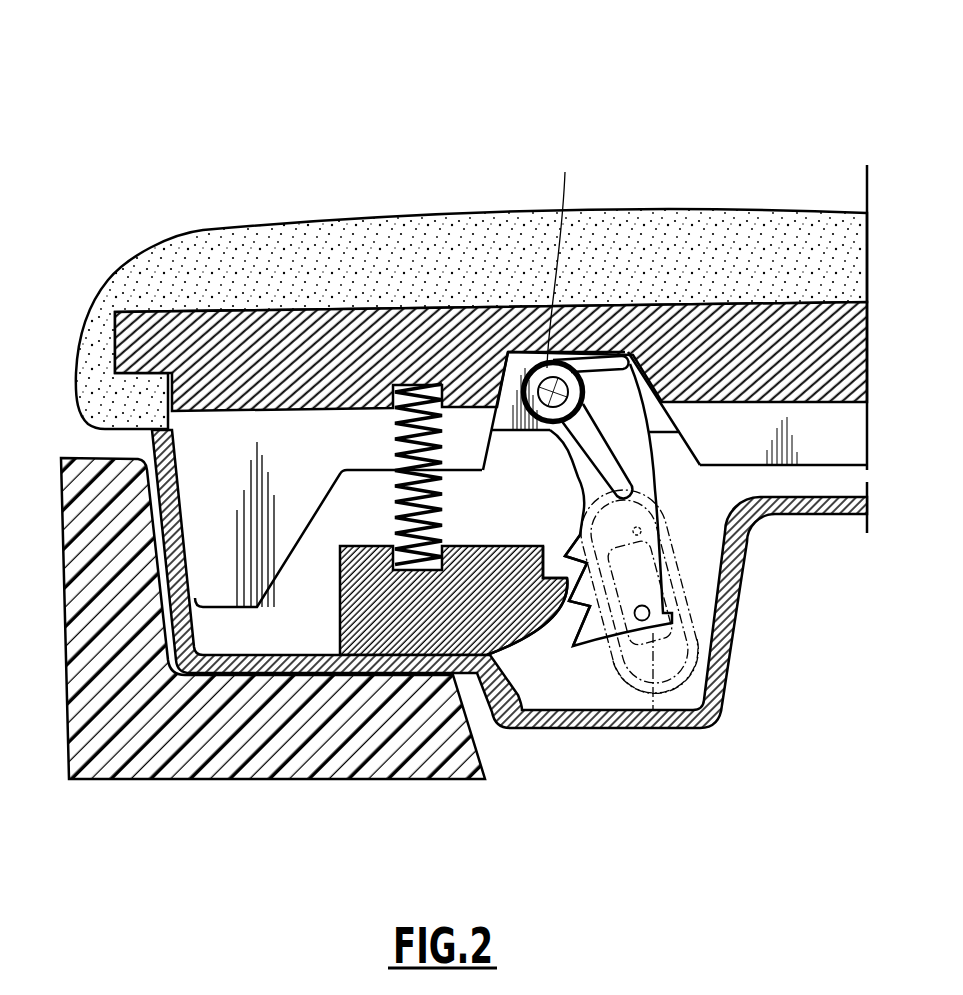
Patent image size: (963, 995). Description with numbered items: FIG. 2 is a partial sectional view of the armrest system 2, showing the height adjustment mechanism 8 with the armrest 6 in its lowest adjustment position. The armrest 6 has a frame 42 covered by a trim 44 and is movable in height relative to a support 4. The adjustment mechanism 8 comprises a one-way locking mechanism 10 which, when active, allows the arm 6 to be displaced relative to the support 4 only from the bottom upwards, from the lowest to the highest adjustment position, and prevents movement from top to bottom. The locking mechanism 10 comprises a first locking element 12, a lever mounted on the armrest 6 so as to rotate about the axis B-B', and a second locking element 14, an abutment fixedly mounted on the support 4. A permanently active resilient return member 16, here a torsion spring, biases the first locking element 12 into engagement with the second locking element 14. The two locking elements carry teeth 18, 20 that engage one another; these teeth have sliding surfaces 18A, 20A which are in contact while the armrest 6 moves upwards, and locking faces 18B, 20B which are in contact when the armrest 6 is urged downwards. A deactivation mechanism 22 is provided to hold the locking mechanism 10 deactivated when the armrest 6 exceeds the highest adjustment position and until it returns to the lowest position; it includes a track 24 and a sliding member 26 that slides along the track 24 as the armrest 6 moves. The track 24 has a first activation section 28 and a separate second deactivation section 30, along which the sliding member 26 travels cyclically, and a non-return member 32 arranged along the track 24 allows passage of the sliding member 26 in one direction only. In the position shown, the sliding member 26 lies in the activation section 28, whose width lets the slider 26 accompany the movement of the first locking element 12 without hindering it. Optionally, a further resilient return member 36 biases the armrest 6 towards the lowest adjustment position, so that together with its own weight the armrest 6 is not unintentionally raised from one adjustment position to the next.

The latch assembly 2 is at (464, 430).
The support 4 is at (623, 733).
The armrest 6 is at (142, 234).
The adjustment mechanism 8 is at (762, 770).
The one-way locking mechanism 10 is at (670, 458).
The first locking element 12 is at (623, 432).
The second locking element 14 is at (340, 625).
The resilient return member 16 is at (605, 355).
The teeth 18 is at (600, 566).
The sliding surface 18A is at (567, 562).
The locking face 18B is at (592, 608).
The teeth 20 is at (453, 574).
The sliding surface 20A is at (548, 610).
The locking face 20B is at (552, 554).
The deactivation mechanism 22 is at (691, 610).
The track 24 is at (673, 691).
The sliding member 26 is at (697, 673).
The activation section 28 is at (653, 710).
The deactivation section 30 is at (673, 588).
The non-return member 32 is at (655, 507).
The resilient return member 36 is at (407, 503).
The frame 42 is at (260, 337).
The trim 44 is at (207, 257).